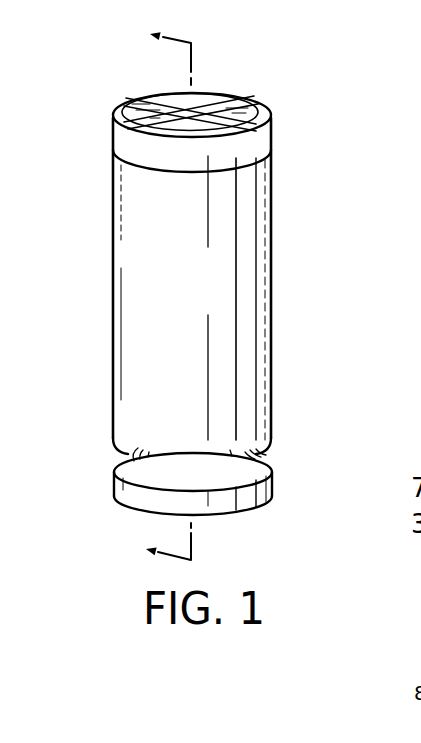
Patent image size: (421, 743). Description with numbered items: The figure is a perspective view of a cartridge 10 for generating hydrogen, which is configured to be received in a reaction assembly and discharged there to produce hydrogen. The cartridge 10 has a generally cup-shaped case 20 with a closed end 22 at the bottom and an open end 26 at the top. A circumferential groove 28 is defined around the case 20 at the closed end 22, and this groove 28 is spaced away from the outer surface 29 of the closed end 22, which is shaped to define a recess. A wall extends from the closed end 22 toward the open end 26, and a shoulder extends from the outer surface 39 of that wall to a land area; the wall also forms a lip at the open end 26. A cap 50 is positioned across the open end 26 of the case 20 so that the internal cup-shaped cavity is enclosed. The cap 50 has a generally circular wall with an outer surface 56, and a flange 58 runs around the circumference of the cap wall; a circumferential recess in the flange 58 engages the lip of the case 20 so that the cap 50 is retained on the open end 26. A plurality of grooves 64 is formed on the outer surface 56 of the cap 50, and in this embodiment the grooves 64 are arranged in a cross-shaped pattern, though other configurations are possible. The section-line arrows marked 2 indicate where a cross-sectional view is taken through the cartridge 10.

The cartridge 10 is at (331, 187).
The case 20 is at (276, 285).
The closed end 22 is at (252, 487).
The open end 26 is at (142, 173).
The circumferential groove 28 is at (256, 455).
The outer surface 29 is at (228, 515).
The outer surface 39 is at (113, 262).
The cap 50 is at (276, 133).
The outer surface 56 is at (248, 107).
The flange 58 is at (127, 140).
The grooves 64 is at (197, 108).
The section line 2- 2 is at (154, 297).